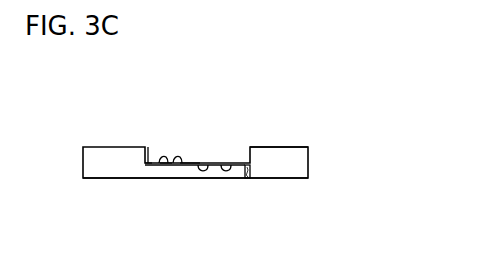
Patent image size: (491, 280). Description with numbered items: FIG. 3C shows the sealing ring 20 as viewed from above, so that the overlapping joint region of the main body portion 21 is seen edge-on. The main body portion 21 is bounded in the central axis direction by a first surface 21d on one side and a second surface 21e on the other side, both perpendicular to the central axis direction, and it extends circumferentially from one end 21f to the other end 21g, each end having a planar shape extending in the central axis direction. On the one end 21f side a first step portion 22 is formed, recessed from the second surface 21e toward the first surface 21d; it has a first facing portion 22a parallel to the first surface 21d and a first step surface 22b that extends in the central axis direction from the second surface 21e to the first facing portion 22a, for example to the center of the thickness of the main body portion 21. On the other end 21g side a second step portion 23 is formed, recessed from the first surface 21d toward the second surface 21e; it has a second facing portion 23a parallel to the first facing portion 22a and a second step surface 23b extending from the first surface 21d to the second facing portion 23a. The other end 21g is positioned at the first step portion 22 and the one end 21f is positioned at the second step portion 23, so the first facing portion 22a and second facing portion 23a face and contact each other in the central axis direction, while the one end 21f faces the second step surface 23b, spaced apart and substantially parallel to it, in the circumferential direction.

The sealing ring 20 is at (389, 92).
The main body portion 21 is at (83, 147).
The first surface 21d is at (98, 179).
The second surface 21e is at (288, 147).
The one end 21f is at (247, 172).
The other end 21g is at (148, 147).
The first step portion 22 is at (183, 165).
The first facing portion 22a is at (165, 165).
The first step surface 22b is at (145, 166).
The second step portion 23 is at (190, 163).
The second facing portion 23a is at (217, 163).
The second step surface 23b is at (250, 162).